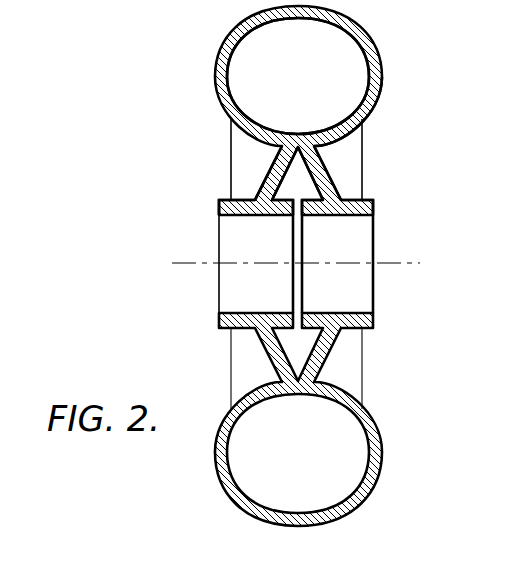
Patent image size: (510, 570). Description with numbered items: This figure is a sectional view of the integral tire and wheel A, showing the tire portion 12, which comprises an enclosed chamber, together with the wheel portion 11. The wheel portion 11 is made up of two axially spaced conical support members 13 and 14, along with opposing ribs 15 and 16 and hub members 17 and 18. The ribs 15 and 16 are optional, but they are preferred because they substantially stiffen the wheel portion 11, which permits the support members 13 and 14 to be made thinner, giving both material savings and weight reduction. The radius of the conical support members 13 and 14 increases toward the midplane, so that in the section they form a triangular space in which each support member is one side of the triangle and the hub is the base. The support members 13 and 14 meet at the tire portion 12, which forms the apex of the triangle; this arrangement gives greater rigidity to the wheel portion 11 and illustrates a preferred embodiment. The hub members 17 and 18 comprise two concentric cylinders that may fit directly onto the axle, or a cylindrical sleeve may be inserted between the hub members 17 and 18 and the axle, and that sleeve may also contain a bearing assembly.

The integral tire and wheel A is at (376, 40).
The wheel portion 11 is at (366, 136).
The tire portion 12 is at (222, 46).
The conical support member 13 is at (263, 179).
The conical support member 14 is at (328, 171).
The rib 15 is at (246, 151).
The rib 16 is at (341, 152).
The hub member 17 is at (223, 209).
The hub member 18 is at (372, 208).